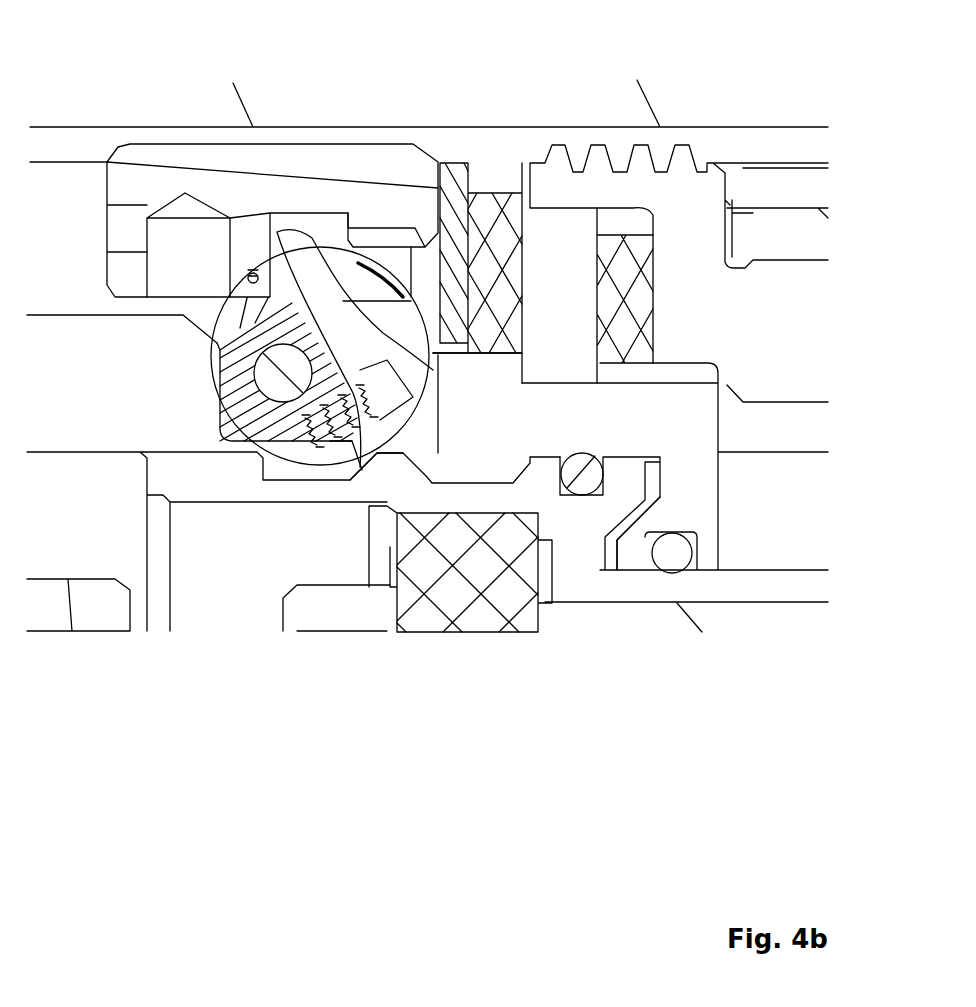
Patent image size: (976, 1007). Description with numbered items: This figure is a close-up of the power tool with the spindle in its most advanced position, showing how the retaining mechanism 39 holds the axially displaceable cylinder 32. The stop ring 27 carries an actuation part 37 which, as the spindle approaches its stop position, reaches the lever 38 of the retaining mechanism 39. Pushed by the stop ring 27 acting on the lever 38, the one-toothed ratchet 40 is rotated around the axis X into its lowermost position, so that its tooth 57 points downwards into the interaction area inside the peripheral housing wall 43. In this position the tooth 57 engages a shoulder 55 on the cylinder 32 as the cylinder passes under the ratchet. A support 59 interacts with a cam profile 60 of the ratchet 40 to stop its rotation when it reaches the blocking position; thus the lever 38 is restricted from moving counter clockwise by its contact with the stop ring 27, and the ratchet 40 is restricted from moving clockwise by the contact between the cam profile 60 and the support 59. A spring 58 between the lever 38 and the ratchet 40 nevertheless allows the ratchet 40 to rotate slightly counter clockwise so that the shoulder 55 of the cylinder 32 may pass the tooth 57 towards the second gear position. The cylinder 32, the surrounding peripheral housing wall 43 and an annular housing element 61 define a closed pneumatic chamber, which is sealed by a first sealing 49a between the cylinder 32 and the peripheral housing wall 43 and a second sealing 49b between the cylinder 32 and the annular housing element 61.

The stop ring 27 is at (130, 162).
The actuation part 37 is at (240, 260).
The lever 38 is at (290, 250).
The retaining mechanism 39 is at (365, 265).
The one-toothed ratchet 40 is at (230, 357).
The support 59 is at (163, 407).
The cam profile 60 is at (213, 416).
The spring 58 is at (355, 398).
The tooth 57 is at (350, 462).
The shoulder 55 is at (380, 467).
The axis X is at (437, 340).
The peripheral housing wall 43 is at (517, 435).
The annular housing element 61 is at (698, 513).
The first sealing 49a is at (583, 482).
The second sealing 49b is at (672, 556).
The cylinder 32 is at (573, 587).